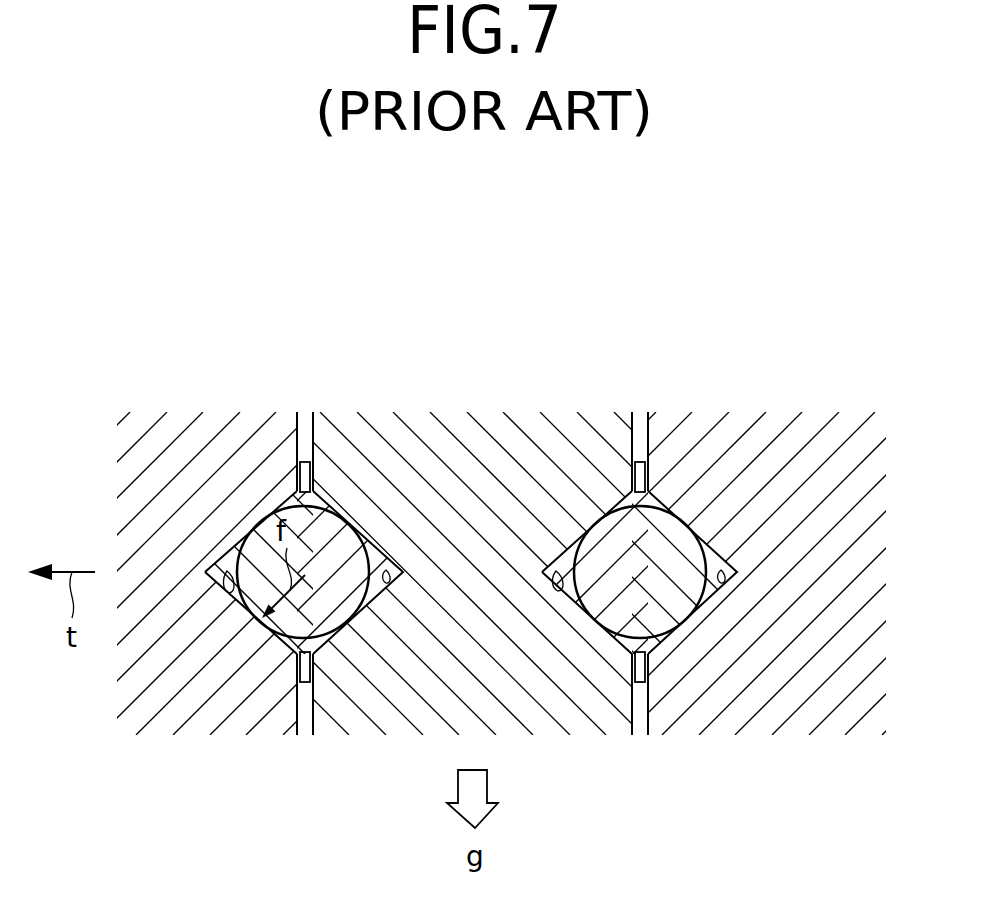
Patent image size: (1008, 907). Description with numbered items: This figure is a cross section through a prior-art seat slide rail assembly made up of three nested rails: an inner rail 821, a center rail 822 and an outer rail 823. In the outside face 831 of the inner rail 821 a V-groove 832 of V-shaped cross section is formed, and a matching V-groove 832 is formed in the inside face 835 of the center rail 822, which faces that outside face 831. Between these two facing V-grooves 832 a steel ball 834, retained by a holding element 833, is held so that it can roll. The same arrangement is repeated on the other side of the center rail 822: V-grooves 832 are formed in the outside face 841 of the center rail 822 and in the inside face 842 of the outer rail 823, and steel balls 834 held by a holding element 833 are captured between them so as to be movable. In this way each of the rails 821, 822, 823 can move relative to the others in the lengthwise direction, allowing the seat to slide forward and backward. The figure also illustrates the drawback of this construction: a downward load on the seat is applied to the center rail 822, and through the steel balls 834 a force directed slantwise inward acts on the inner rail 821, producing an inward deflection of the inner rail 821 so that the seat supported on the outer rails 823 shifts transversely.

The inner rail 821 is at (158, 378).
The center rail 822 is at (485, 378).
The outer rail 823 is at (790, 378).
The outside face 831 is at (303, 443).
The V-groove 832 is at (232, 588).
The holding element 833 is at (298, 656).
The steel ball 834 is at (333, 540).
The inside face 835 is at (303, 707).
The outside face 841 is at (641, 445).
The inside face 842 is at (641, 700).